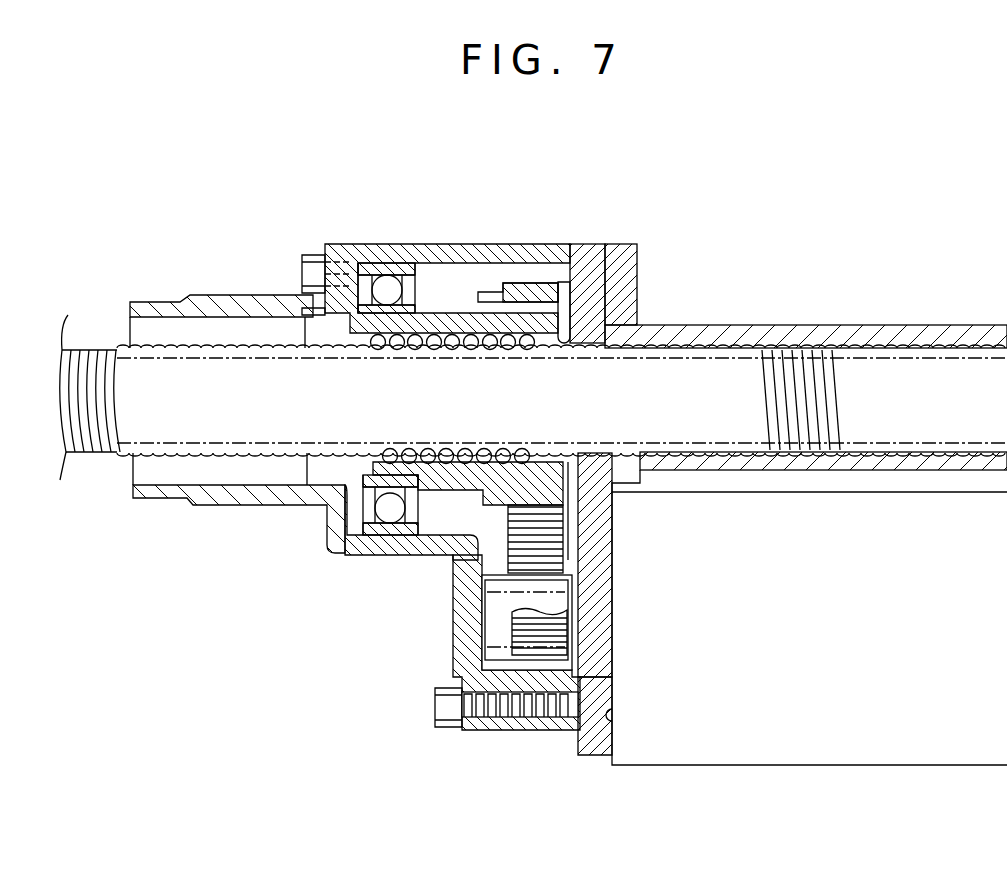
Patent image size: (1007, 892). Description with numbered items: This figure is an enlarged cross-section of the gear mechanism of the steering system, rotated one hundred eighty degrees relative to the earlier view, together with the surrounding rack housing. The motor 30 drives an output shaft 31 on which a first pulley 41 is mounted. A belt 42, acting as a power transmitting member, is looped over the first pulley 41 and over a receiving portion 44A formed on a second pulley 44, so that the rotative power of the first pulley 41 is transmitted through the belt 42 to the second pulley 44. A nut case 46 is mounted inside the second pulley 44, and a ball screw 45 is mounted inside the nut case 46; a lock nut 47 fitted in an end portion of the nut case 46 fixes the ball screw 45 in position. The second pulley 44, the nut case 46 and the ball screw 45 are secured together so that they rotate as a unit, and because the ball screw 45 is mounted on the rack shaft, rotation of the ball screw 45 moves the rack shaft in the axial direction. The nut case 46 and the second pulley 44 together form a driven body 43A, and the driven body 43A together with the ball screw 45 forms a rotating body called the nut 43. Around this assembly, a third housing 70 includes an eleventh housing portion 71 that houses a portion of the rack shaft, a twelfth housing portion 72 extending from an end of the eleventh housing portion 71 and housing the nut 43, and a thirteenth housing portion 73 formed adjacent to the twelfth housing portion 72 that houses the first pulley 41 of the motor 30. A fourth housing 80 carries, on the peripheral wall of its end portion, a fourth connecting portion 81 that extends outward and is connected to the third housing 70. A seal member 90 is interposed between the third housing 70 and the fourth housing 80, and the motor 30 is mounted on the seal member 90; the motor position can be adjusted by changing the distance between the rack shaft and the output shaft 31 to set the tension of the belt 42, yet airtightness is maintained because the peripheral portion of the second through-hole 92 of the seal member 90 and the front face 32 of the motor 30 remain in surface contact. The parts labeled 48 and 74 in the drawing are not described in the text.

The motor 30 is at (818, 767).
The output shaft 31 is at (482, 590).
The front face 32 is at (612, 715).
The first pulley 41 is at (487, 588).
The belt 42 is at (517, 653).
The nut 43 is at (535, 166).
The driven body 43A is at (547, 208).
The second pulley 44 is at (593, 259).
The receiving portion 44A is at (552, 278).
The ball screw 45 is at (444, 300).
The nut case 46 is at (472, 290).
The lock nut 47 is at (552, 346).
The bolt 48 is at (372, 262).
The third housing 70 is at (148, 302).
The eleventh housing portion 71 is at (208, 505).
The twelfth housing portion 72 is at (365, 558).
The thirteenth housing portion 73 is at (510, 731).
The spline 74 is at (555, 731).
The fourth housing 80 is at (960, 326).
The fourth connecting portion 81 is at (637, 252).
The seal member 90 is at (590, 244).
The second through-hole 92 is at (612, 572).